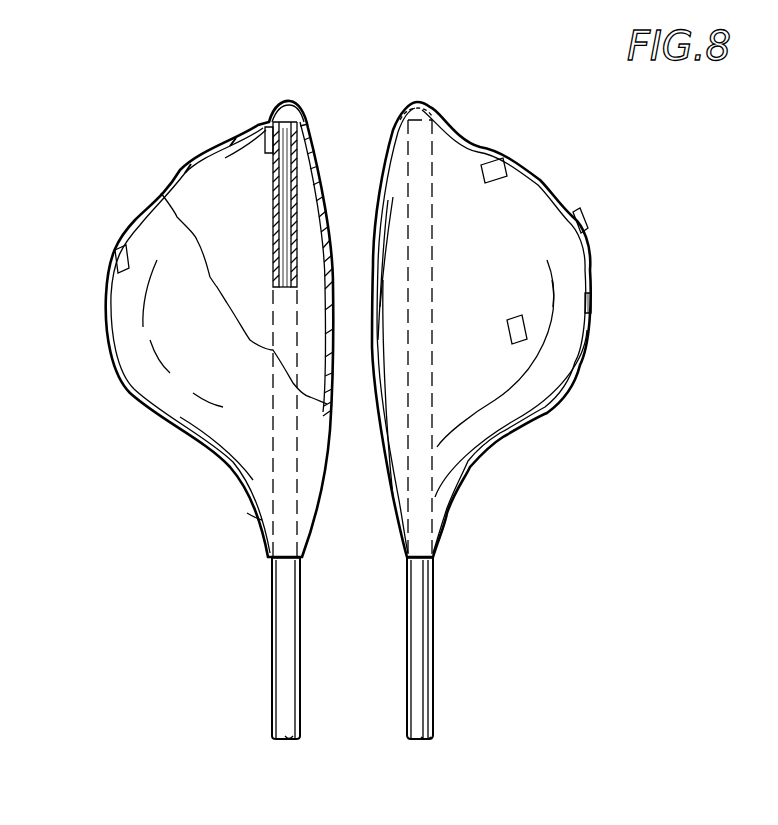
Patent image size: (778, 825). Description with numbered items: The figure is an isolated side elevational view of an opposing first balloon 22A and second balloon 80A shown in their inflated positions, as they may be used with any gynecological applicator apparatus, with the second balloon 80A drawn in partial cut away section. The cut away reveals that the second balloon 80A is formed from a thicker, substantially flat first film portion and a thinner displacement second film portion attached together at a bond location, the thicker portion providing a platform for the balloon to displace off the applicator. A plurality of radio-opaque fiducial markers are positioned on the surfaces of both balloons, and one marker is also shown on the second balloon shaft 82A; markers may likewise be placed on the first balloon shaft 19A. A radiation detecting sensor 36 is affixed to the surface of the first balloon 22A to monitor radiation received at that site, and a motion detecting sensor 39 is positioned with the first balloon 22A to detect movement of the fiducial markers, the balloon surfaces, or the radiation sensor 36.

The second balloon 80A is at (181, 142).
The first balloon 22A is at (555, 441).
The radiation detecting sensor 36 is at (527, 332).
The motion detecting sensor 39 is at (594, 297).
The second balloon shaft 82A is at (270, 643).
The first balloon shaft 19A is at (424, 648).